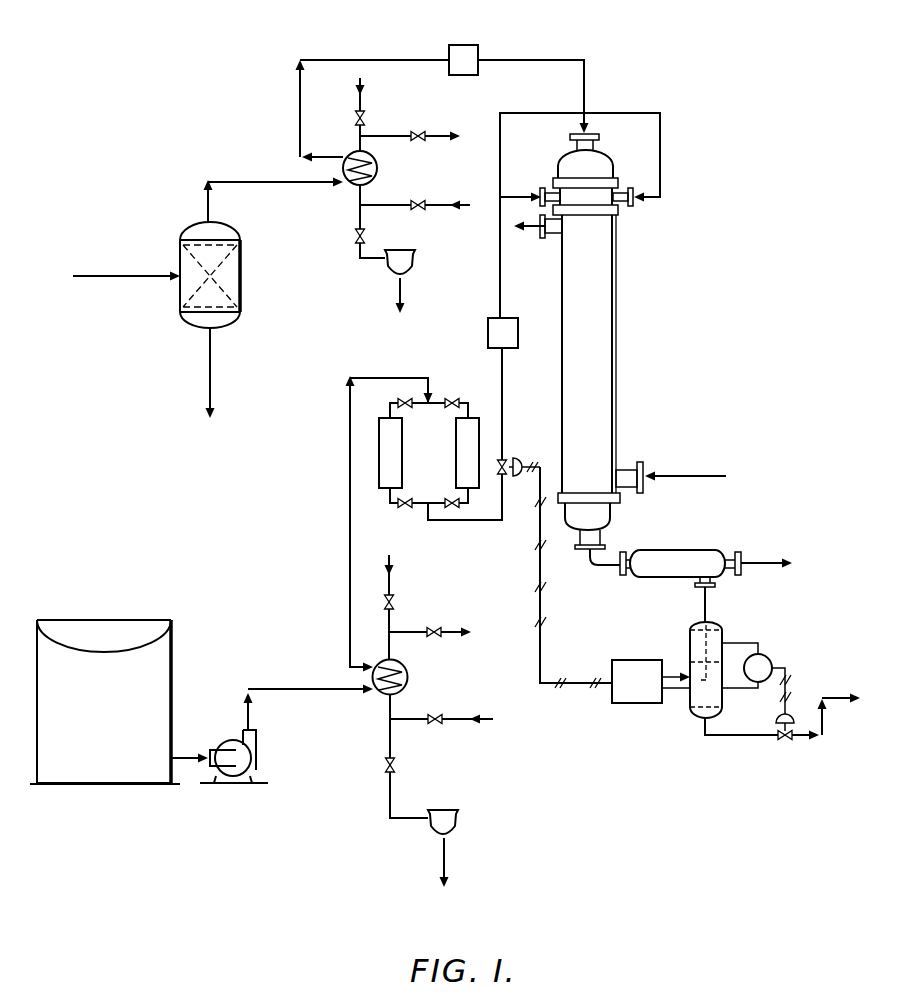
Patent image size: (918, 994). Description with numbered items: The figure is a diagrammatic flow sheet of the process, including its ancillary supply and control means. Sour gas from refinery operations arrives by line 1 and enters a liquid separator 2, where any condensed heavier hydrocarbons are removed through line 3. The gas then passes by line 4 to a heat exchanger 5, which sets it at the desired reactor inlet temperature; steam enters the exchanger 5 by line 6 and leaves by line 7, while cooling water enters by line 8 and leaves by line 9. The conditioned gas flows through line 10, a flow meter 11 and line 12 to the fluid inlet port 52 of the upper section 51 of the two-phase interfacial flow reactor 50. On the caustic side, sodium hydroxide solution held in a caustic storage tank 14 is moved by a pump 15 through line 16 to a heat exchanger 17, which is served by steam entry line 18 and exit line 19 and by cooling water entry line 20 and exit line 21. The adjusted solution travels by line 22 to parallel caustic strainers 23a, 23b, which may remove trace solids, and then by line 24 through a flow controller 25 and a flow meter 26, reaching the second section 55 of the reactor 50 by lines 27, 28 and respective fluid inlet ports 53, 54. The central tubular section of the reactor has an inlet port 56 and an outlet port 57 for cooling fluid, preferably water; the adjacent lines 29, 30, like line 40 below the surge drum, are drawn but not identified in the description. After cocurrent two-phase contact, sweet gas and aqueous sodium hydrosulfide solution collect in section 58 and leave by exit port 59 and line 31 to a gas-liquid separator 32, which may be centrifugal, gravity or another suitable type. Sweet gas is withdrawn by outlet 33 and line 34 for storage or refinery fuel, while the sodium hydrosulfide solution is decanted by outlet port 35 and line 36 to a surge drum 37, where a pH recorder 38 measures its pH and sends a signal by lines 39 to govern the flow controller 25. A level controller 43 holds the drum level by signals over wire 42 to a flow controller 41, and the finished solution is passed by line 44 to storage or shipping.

The line 1 is at (102, 276).
The liquid separator 2 is at (241, 278).
The line 3 is at (208, 378).
The line 4 is at (235, 182).
The heat exchanger 5 is at (378, 170).
The line 6 is at (362, 103).
The line 7 is at (358, 258).
The line 8 is at (438, 205).
The line 9 is at (433, 136).
The line 10 is at (298, 110).
The flow meter 11 is at (462, 45).
The line 12 is at (590, 88).
The caustic storage tank 14 is at (172, 654).
The pump 15 is at (258, 746).
The line 16 is at (313, 688).
The heat exchanger 17 is at (406, 672).
The entry line 18 is at (392, 590).
The exit line 19 is at (390, 804).
The entry line 20 is at (458, 720).
The exit line 21 is at (452, 632).
The line 22 is at (348, 462).
The caustic strainer 23a is at (403, 447).
The caustic strainer 23b is at (455, 478).
The line 24 is at (481, 522).
The flow controller 25 is at (509, 461).
The flow meter 26 is at (488, 333).
The line 27 is at (498, 286).
The line 28 is at (514, 196).
The inlet line 29 is at (706, 476).
The outlet line 30 is at (525, 228).
The line 31 is at (597, 568).
The gas-liquid separator 32 is at (668, 550).
The outlet 33 is at (741, 552).
The line 34 is at (764, 563).
The outlet port 35 is at (715, 582).
The line 36 is at (704, 612).
The surge drum 37 is at (690, 638).
The pH recorder 38 is at (642, 659).
The lines 39 is at (538, 662).
The product line 40 is at (754, 740).
The flow controller 41 is at (778, 721).
The wire 42 is at (787, 670).
The level controller 43 is at (767, 656).
The line 44 is at (838, 702).
The two-phase interfacial flow reactor 50 is at (618, 343).
The upper section 51 is at (612, 158).
The fluid inlet port 52 is at (572, 136).
The fluid inlet port 53 is at (543, 188).
The fluid inlet port 54 is at (631, 190).
The second section 55 is at (620, 208).
The inlet port 56 is at (628, 468).
The outlet port 57 is at (547, 240).
The section 58 is at (612, 520).
The exit port 59 is at (580, 548).